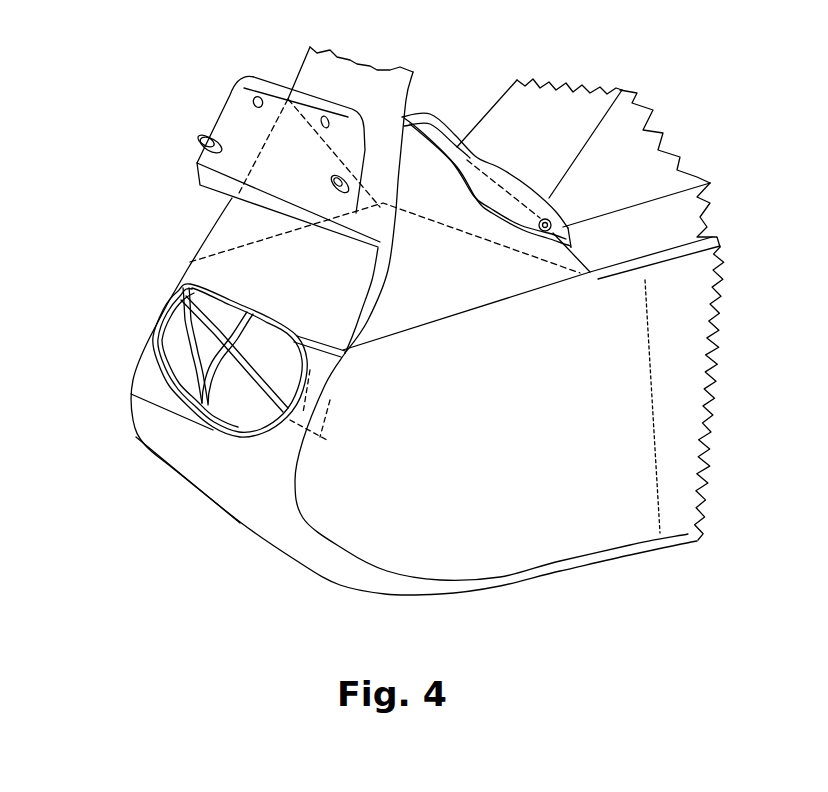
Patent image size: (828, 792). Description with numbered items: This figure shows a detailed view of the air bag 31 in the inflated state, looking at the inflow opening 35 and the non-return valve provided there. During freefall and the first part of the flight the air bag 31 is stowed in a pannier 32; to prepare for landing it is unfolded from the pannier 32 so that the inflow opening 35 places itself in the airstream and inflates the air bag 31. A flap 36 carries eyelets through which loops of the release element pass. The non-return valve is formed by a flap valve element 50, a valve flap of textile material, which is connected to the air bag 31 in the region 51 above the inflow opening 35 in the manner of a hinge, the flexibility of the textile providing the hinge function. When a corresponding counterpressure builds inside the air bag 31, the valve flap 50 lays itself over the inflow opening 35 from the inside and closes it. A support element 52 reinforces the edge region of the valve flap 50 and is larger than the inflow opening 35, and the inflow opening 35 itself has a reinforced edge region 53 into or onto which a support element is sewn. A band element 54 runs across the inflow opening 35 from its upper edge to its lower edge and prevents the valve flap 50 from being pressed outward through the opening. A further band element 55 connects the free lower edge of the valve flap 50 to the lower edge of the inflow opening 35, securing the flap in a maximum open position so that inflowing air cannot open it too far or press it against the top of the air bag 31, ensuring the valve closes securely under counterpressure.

The air bag 31 is at (515, 520).
The pannier 32 is at (233, 131).
The inflow opening 35 is at (168, 414).
The flap 36 is at (498, 177).
The flap valve element 50 is at (270, 370).
The region 51 is at (322, 338).
The support element 52 is at (330, 437).
The reinforced edge region 53 is at (157, 352).
The band element 54 is at (203, 386).
The band element 55 is at (228, 398).